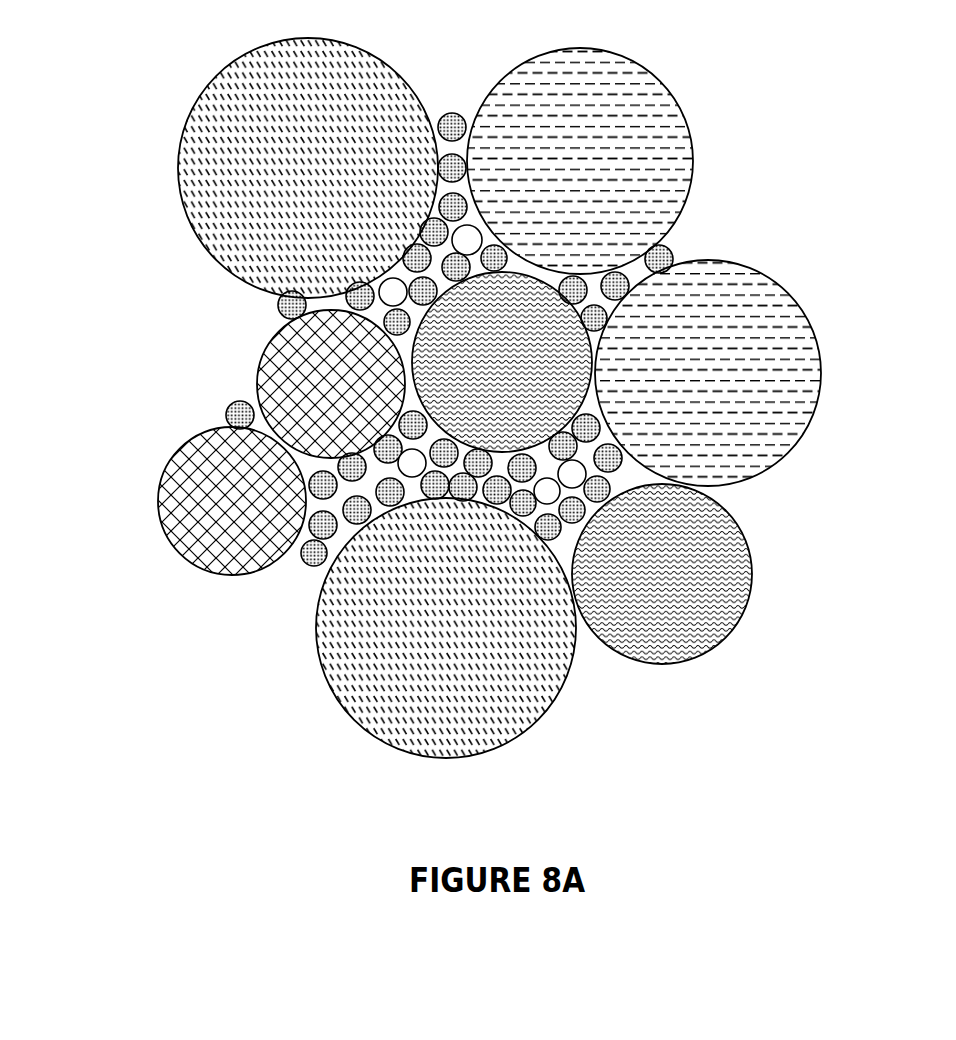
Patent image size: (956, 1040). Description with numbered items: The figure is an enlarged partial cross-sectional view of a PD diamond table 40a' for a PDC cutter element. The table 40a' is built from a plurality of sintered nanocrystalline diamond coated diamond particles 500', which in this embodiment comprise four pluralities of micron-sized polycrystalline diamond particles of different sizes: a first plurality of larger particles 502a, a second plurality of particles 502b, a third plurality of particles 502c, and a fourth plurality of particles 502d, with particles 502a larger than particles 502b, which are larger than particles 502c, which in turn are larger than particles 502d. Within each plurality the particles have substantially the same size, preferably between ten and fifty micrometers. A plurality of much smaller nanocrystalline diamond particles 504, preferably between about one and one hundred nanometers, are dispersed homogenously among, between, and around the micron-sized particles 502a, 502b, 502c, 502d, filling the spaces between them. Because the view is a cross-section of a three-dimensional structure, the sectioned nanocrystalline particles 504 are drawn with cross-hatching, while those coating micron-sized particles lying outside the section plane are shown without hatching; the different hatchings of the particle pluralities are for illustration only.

The PD diamond table 40a' is at (316, 302).
The first plurality of similarly sized micron-sized polycrystalline diamond particle 502a is at (238, 90).
The second plurality of similarly sized micron-sized polycrystalline diamond particl 502b is at (538, 80).
The third plurality of similarly sized micron-sized polycrystalline diamond particle 502c is at (718, 578).
The fourth plurality of similarly sized micron-sized polycrystalline diamond particl 502d is at (276, 392).
The sintered nanocrystalline diamond coated diamond particle 500' is at (706, 308).
The nanocrystalline diamond particles 504 is at (318, 556).